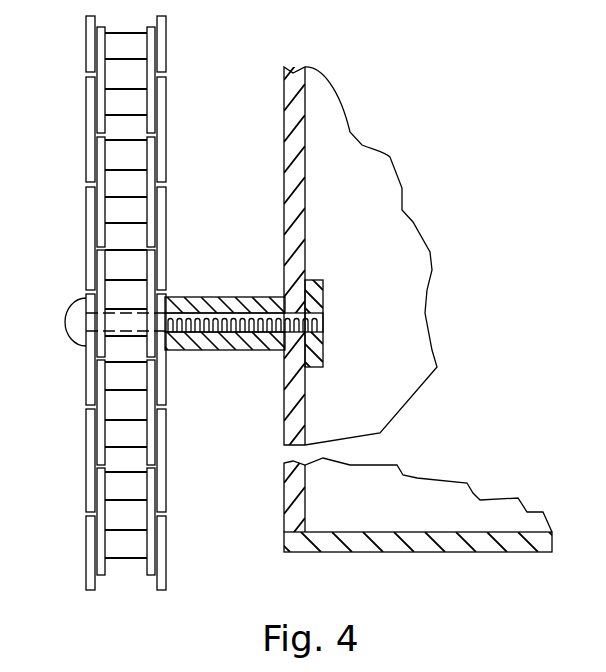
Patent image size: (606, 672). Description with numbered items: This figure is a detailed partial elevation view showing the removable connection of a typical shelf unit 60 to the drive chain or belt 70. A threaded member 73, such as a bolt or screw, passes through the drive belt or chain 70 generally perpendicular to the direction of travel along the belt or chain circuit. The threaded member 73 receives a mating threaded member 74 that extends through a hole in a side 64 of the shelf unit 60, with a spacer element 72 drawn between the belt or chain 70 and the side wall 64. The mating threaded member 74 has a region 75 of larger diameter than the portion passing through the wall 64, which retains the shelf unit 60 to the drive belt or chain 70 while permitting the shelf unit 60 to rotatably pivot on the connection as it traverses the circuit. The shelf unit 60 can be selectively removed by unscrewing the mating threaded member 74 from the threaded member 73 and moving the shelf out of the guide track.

The shelf unit 60 is at (457, 555).
The side wall of shelf unit 64 is at (303, 398).
The drive chain or belt 70 is at (86, 210).
The upper spacer bar 72 is at (198, 296).
The threaded member 73 is at (78, 321).
The mating threaded member 74 is at (240, 351).
The region of larger diameter 75 is at (323, 294).